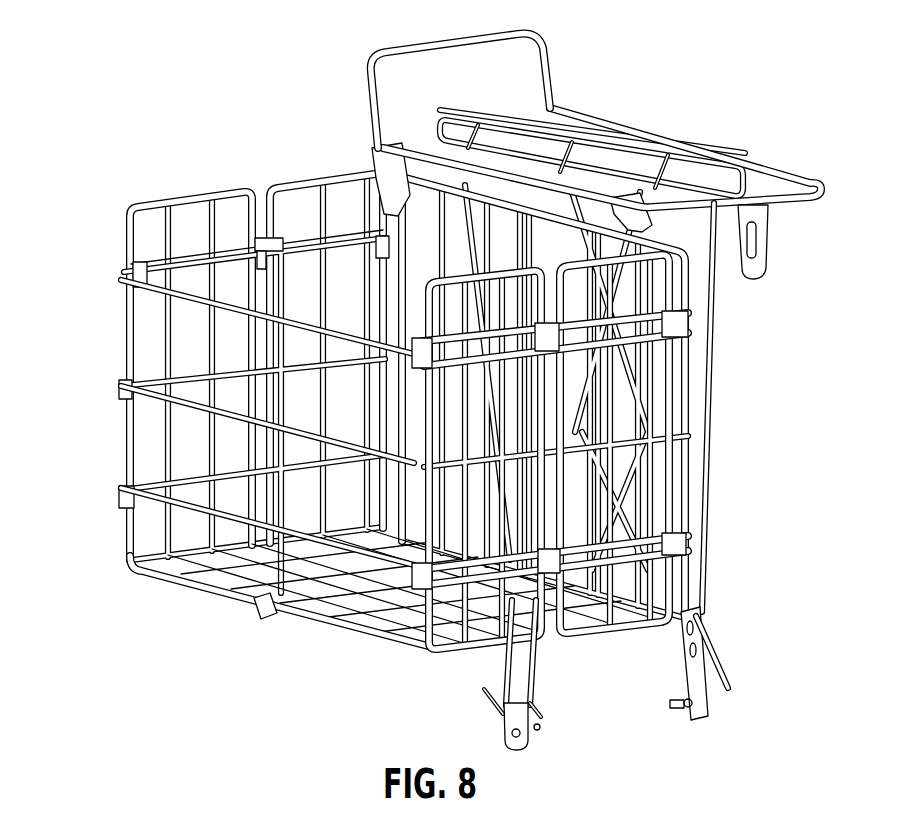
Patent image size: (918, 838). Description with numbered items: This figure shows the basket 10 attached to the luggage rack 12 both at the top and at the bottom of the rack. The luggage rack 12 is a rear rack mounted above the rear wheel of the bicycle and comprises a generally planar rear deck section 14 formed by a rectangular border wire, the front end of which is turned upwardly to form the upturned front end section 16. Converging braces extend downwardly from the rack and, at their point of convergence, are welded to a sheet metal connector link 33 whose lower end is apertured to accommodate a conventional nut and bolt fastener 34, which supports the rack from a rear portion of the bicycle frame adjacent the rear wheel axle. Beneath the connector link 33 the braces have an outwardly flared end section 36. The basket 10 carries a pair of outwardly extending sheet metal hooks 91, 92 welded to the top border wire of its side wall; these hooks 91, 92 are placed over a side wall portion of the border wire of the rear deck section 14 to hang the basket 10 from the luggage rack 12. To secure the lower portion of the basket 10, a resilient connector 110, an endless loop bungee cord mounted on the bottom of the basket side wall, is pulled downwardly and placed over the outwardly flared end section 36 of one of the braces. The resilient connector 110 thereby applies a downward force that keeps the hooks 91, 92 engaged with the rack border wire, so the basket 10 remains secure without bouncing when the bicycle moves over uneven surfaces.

The basket 10 is at (108, 193).
The luggage rack 12 is at (596, 364).
The rear deck section 14 is at (740, 158).
The upturned front end section 16 is at (432, 46).
The sheet metal connector link 33 is at (502, 738).
The nut and bolt fastener 34 is at (540, 727).
The outwardly flared end section 36 is at (487, 705).
The sheet metal hook 91 is at (656, 228).
The sheet metal hook 92 is at (372, 165).
The resilient connector 110 is at (518, 681).